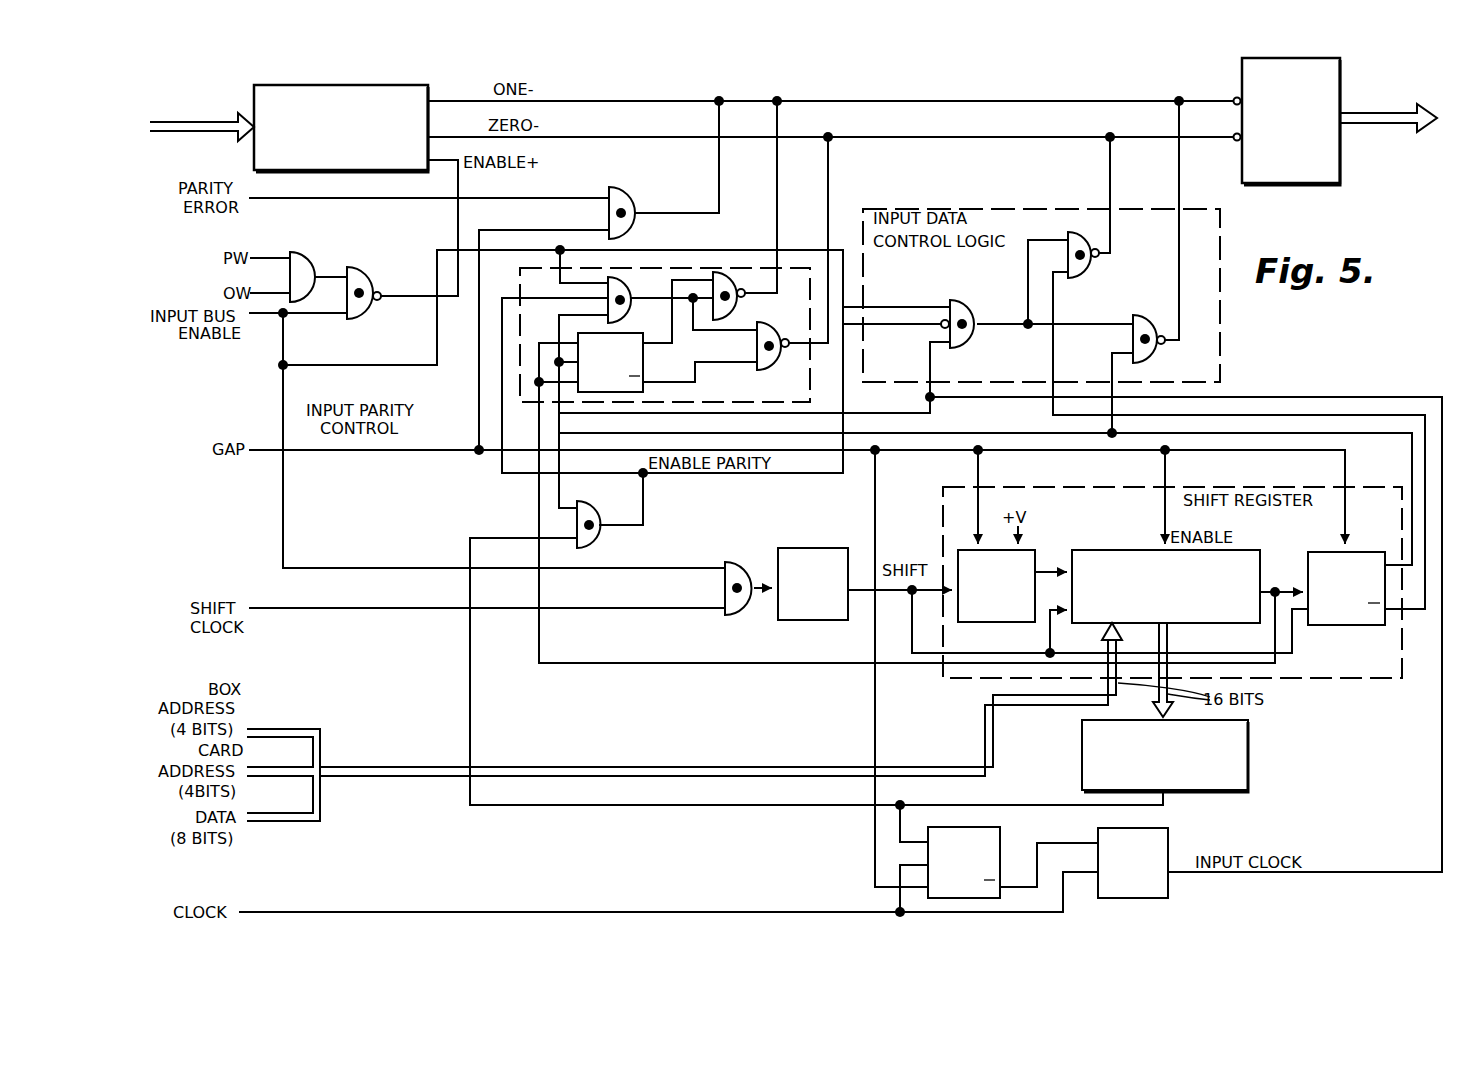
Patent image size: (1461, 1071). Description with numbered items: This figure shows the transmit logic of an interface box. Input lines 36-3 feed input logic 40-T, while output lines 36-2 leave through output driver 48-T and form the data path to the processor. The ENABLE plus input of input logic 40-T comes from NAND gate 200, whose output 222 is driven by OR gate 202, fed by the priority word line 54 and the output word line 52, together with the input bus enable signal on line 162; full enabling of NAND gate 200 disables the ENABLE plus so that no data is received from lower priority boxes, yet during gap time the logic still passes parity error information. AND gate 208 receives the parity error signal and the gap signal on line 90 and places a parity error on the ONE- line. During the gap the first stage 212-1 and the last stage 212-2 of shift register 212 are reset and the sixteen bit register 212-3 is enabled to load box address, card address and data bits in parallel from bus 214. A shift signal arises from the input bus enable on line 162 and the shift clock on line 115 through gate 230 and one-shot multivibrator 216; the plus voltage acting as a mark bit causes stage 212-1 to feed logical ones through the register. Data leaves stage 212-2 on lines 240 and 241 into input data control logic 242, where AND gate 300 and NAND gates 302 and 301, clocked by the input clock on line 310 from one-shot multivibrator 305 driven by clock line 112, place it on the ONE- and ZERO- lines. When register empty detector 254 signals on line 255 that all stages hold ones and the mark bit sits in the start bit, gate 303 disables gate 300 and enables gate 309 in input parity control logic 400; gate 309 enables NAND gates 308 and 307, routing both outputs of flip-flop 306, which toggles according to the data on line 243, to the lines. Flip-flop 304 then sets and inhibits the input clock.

The input lines 36-3 is at (200, 121).
The input logic 40-T is at (400, 85).
The output driver 48-T is at (1242, 80).
The output lines 36-2 is at (1368, 112).
The AND gate 208 is at (625, 188).
The priority word line 54 is at (268, 257).
The output word line 52 is at (270, 292).
The OR gate 202 is at (303, 256).
The NAND gate 200 is at (361, 270).
The output line of NAND gate 222 is at (399, 298).
The input bus enable line 162 is at (268, 330).
The gap line 90 is at (270, 448).
The input parity control logic 400 is at (520, 402).
The AND gate 309 is at (627, 278).
The NAND gate 308 is at (742, 297).
The NAND gate 307 is at (756, 344).
The flip-flop 306 is at (643, 347).
The input data control logic 242 is at (1222, 388).
The AND gate 300 is at (970, 294).
The NAND gate 301 is at (1085, 270).
The NAND gate 302 is at (1155, 357).
The AND gate 303 is at (601, 541).
The shift register 212 is at (1030, 487).
The first stage of shift register 212-1 is at (1031, 549).
The 16 bit register 212-3 is at (1152, 550).
The last stage of shift register 212-2 is at (1320, 552).
The Q output line 240 is at (1412, 465).
The complemented Q output line 241 is at (1401, 612).
The AND gate 230 is at (734, 561).
The one-shot multivibrator 216 is at (810, 548).
The shift clock line 115 is at (625, 610).
The data line 243 is at (770, 665).
The bus 214 is at (700, 766).
The register empty detector 254 is at (1250, 777).
The register empty signal line 255 is at (1165, 807).
The flip-flop 304 is at (978, 826).
The one-shot multivibrator 305 is at (1168, 836).
The input clock line 310 is at (1366, 871).
The clock line 112 is at (698, 911).